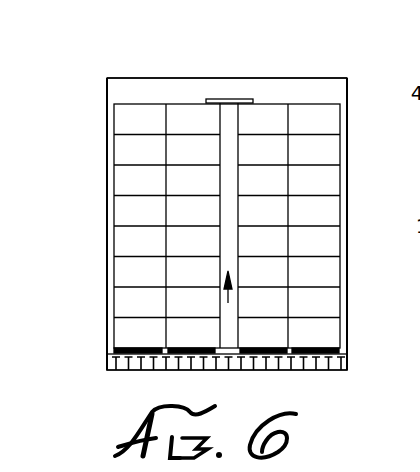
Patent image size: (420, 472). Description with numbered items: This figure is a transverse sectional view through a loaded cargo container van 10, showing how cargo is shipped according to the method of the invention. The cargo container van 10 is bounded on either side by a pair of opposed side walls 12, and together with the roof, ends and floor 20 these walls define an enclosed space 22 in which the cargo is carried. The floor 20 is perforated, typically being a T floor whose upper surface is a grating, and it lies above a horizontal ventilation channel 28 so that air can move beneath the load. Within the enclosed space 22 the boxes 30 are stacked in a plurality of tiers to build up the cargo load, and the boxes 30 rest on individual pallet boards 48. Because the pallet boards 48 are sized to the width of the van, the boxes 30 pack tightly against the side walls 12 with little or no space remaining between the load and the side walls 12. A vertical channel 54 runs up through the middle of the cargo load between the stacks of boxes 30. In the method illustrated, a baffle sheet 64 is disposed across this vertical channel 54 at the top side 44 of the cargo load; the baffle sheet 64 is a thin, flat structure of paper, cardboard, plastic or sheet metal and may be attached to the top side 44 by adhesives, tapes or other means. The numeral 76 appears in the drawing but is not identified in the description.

The cargo container van 10 is at (315, 77).
The side walls 12 is at (107, 234).
The floor 20 is at (283, 365).
The enclosed space 22 is at (338, 91).
The horizontal ventilation channel 28 is at (123, 368).
The boxes 30 is at (330, 272).
The top side 44 is at (125, 103).
The pallet boards 48 is at (320, 350).
The vertical channels 54 is at (228, 152).
The baffle sheet 64 is at (231, 99).
The outlet 76 is at (370, 432).